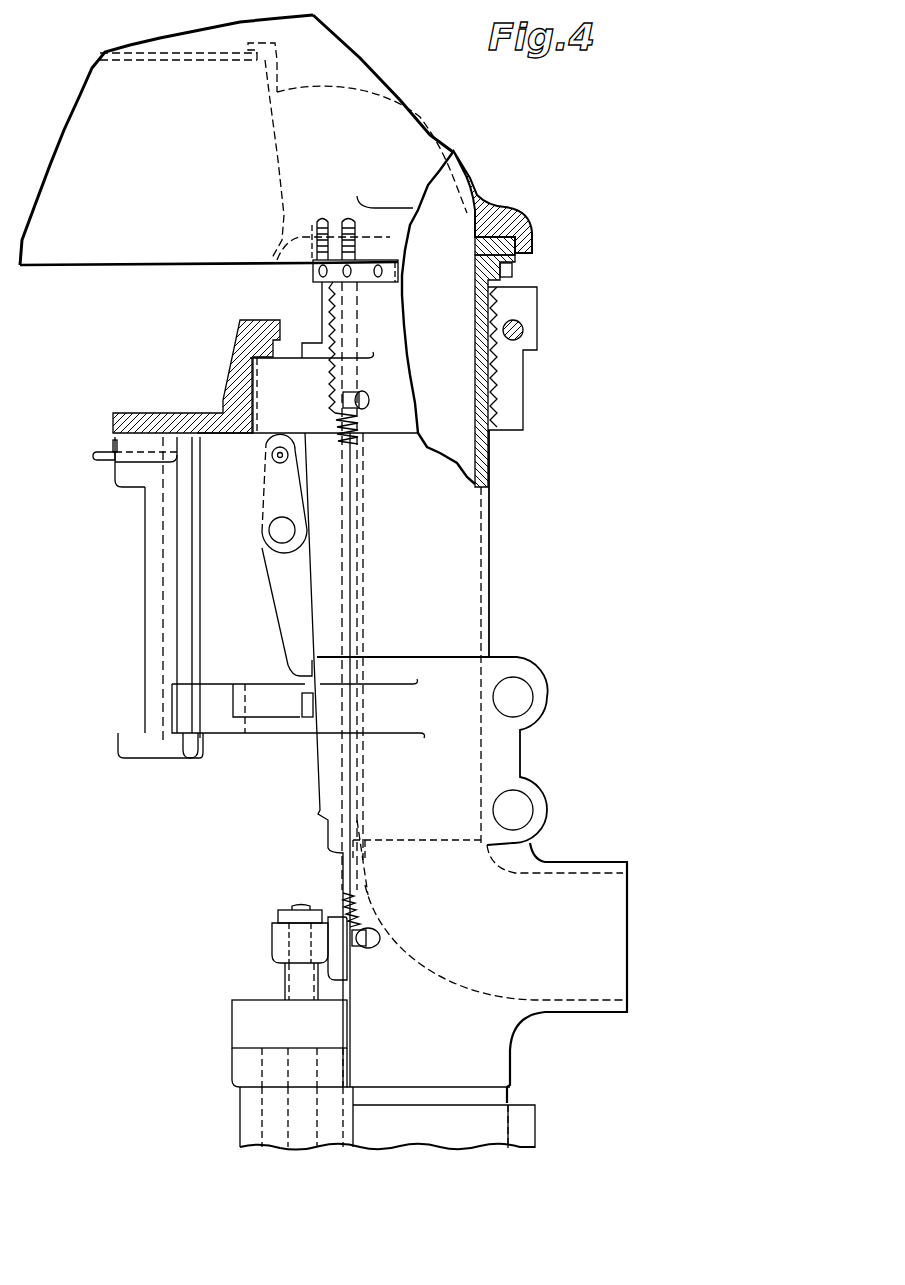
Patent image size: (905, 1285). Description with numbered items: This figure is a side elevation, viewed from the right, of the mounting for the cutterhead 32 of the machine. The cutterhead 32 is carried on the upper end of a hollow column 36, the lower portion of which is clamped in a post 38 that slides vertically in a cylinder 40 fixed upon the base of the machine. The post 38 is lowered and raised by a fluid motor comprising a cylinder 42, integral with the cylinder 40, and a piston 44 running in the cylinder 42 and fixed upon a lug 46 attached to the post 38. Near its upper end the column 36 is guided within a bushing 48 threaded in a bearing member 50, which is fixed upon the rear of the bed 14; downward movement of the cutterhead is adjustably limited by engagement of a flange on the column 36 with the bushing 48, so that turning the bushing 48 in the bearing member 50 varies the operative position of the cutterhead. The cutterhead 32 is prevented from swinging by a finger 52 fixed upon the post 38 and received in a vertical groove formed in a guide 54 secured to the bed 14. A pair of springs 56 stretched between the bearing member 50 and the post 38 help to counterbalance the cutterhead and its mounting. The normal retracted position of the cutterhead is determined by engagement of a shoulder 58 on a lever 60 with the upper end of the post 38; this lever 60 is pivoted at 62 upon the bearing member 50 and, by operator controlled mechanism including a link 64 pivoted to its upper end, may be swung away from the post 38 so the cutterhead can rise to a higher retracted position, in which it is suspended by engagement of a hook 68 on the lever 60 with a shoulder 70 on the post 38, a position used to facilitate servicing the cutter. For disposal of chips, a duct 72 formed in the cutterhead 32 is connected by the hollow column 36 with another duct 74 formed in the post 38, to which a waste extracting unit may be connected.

The bed 14 is at (178, 413).
The cutterhead 32 is at (335, 52).
The hollow column 36 is at (495, 530).
The post 38 is at (512, 1028).
The cylinder 40 is at (522, 1122).
The cylinder 42 is at (245, 1120).
The piston 44 is at (285, 975).
The lug 46 is at (275, 933).
The bushing 48 is at (513, 278).
The bearing member 50 is at (518, 405).
The finger 52 is at (287, 738).
The guide 54 is at (145, 603).
The springs 56 is at (358, 893).
The shoulder 58 is at (300, 650).
The lever 60 is at (290, 605).
The pivot 62 is at (272, 530).
The link 64 is at (97, 455).
The hook 68 is at (337, 568).
The shoulder 70 is at (318, 815).
The duct 72 is at (415, 120).
The duct 74 is at (583, 875).